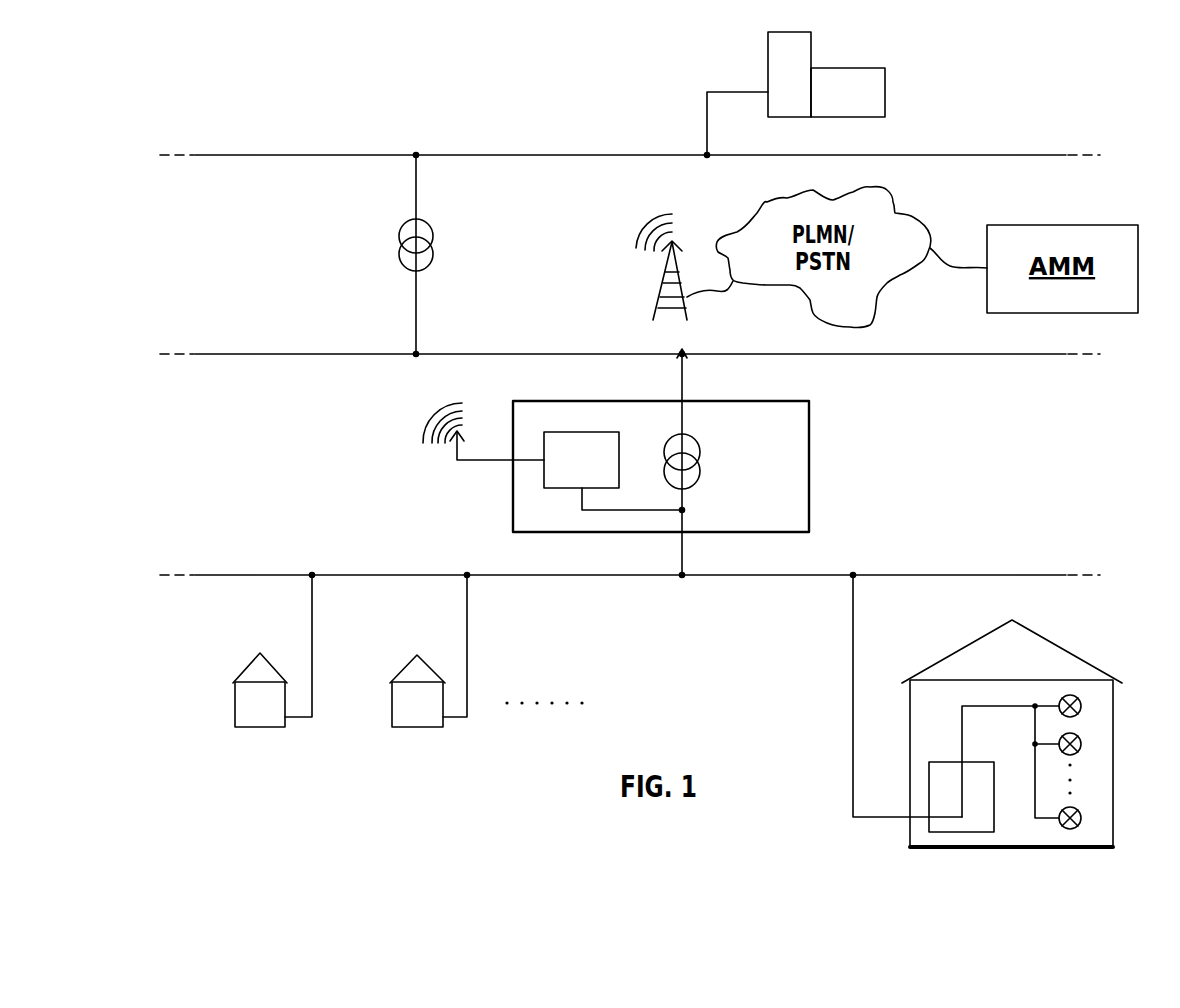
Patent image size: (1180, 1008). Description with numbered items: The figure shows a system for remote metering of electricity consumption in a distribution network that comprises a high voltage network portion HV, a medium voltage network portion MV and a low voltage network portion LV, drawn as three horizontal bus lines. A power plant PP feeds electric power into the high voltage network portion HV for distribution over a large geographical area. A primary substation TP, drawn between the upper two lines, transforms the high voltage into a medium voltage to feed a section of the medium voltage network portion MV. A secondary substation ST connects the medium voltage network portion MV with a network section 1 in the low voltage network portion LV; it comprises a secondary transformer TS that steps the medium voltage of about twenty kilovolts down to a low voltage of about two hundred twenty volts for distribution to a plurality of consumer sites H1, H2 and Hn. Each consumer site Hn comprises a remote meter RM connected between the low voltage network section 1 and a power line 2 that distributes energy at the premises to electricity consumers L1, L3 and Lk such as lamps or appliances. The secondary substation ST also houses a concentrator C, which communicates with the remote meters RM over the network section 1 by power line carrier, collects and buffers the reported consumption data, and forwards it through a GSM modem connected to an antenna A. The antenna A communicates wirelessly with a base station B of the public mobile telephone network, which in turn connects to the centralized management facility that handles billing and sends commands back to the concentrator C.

The high voltage network portion HV is at (263, 155).
The medium voltage network portion MV is at (264, 354).
The low voltage network portion LV is at (253, 575).
The primary substation TP is at (433, 248).
The power plant PP is at (870, 97).
The base station B is at (658, 290).
The secondary substation ST is at (809, 465).
The secondary transformer TS is at (700, 460).
The concentrator C is at (569, 483).
The antenna A is at (455, 451).
The consumer site H1 is at (257, 715).
The consumer site H2 is at (412, 715).
The network section 1 is at (853, 657).
The consumer site Hn is at (910, 724).
The power line 2 is at (962, 722).
The remote meter RM is at (976, 772).
The electricity consumer L1 is at (1081, 706).
The electricity consumer L3 is at (1081, 744).
The electricity consumer Lk is at (1081, 818).